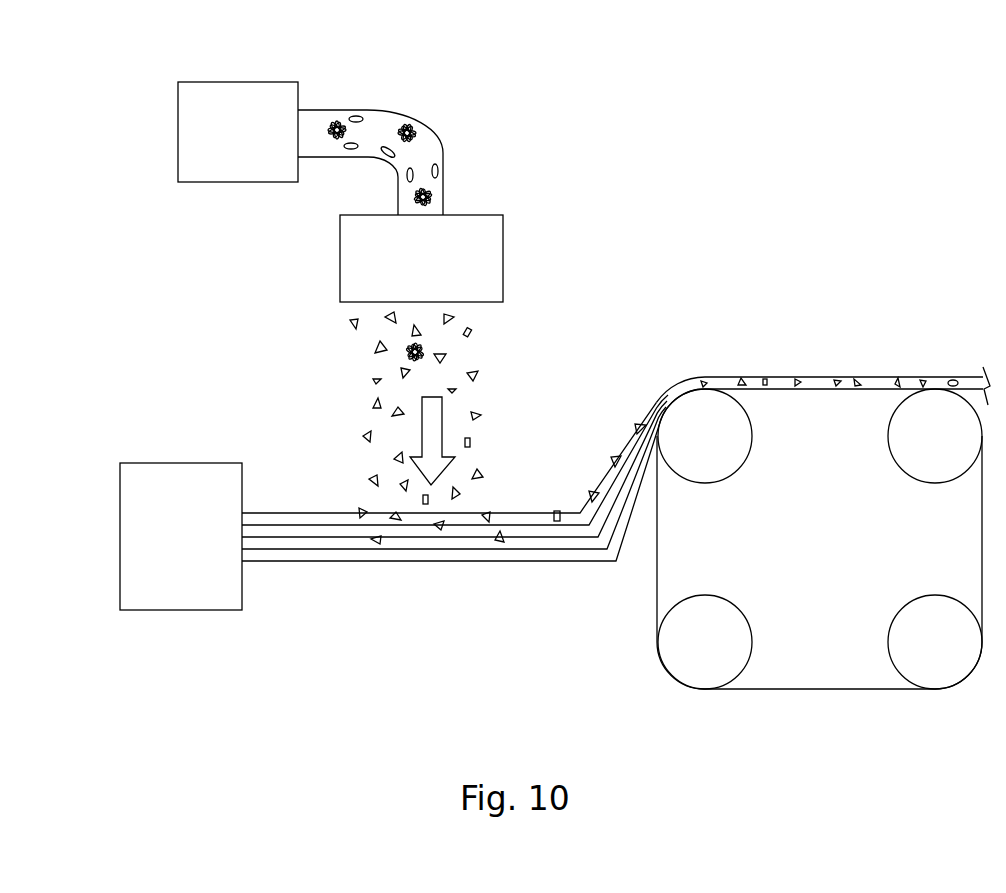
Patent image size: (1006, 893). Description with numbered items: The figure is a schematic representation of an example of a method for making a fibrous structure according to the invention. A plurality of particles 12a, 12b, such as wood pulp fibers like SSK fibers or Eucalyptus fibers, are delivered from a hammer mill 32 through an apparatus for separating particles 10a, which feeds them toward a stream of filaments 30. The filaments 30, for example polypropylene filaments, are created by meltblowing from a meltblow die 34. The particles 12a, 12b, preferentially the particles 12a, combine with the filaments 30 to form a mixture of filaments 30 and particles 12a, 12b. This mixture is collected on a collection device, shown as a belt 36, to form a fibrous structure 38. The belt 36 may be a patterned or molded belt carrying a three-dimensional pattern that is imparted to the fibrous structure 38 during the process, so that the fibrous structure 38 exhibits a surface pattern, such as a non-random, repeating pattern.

The hammer mill 32 is at (238, 132).
The apparatus for separating particles 10a is at (400, 297).
The particles 12b is at (340, 126).
The particles 12a is at (480, 370).
The meltblow die 34 is at (181, 536).
The filaments 30 is at (280, 526).
The belt 36 is at (793, 689).
The fibrous structure 38 is at (878, 370).